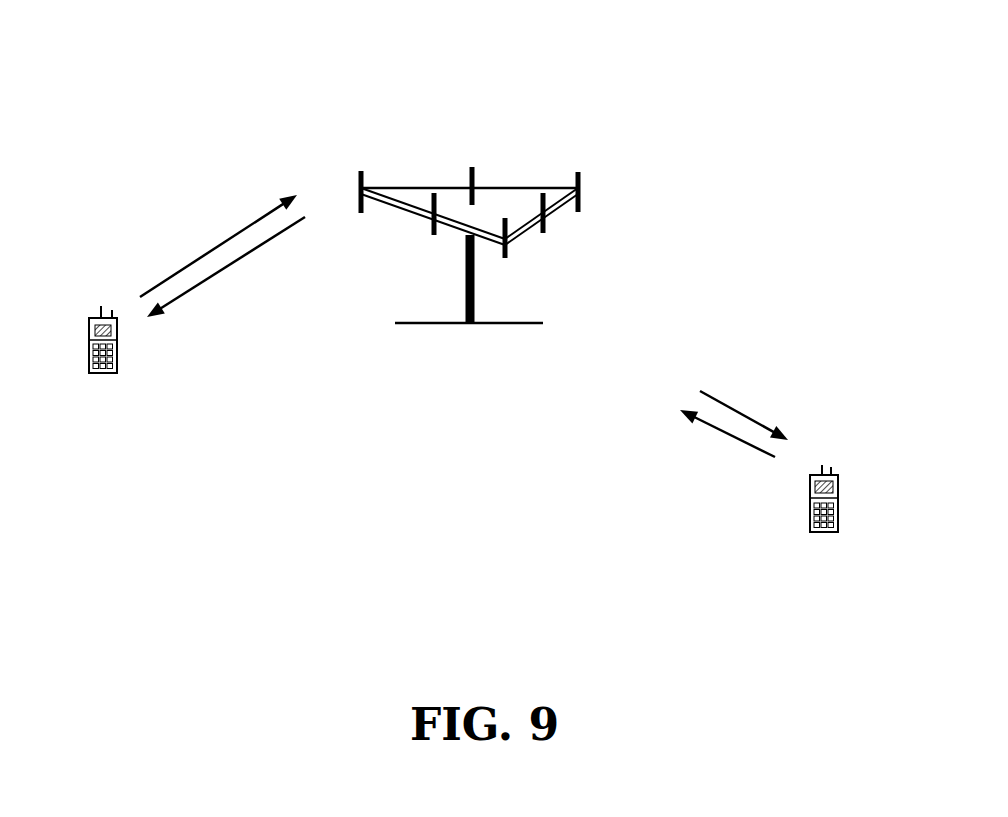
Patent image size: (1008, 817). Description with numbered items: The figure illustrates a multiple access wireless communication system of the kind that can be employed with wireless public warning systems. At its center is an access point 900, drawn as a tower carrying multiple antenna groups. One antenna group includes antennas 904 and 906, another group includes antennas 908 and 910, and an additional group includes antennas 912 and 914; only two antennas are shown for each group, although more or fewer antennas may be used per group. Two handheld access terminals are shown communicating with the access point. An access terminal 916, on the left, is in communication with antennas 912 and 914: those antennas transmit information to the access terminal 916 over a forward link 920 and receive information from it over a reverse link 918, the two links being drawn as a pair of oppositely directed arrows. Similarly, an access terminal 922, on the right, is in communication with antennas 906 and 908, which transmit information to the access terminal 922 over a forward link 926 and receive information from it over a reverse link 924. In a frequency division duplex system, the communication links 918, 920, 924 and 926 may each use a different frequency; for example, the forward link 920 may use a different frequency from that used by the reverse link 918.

The access point 900 is at (445, 324).
The antenna 904 is at (507, 256).
The antenna 906 is at (545, 233).
The antenna 908 is at (583, 205).
The antenna 910 is at (472, 167).
The antenna 912 is at (361, 188).
The antenna 914 is at (434, 235).
The access terminal 916 is at (101, 310).
The reverse link 918 is at (217, 248).
The forward link 920 is at (237, 262).
The access terminal 922 is at (822, 465).
The reverse link 924 is at (715, 425).
The forward link 926 is at (748, 418).